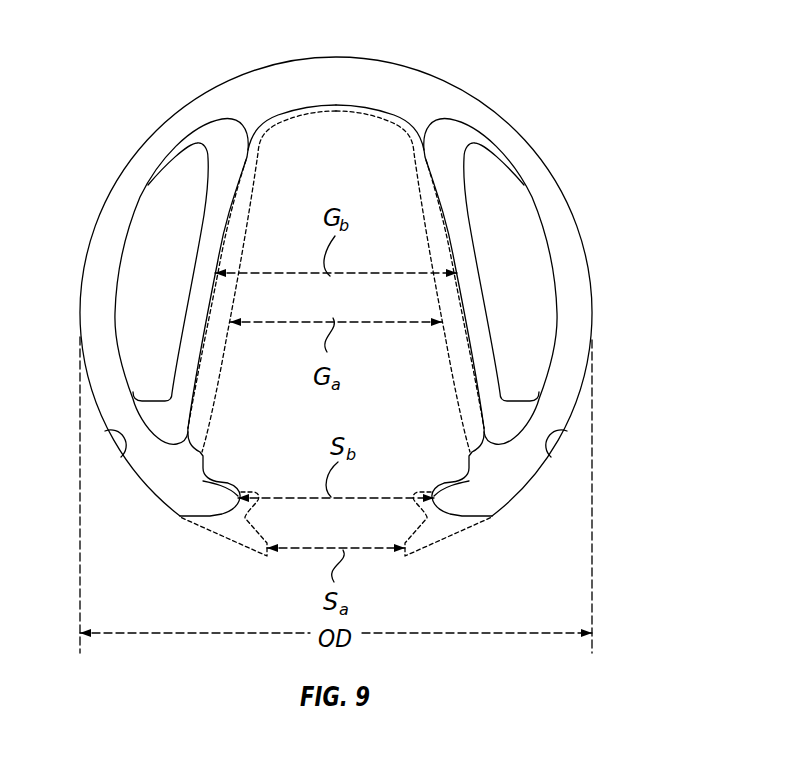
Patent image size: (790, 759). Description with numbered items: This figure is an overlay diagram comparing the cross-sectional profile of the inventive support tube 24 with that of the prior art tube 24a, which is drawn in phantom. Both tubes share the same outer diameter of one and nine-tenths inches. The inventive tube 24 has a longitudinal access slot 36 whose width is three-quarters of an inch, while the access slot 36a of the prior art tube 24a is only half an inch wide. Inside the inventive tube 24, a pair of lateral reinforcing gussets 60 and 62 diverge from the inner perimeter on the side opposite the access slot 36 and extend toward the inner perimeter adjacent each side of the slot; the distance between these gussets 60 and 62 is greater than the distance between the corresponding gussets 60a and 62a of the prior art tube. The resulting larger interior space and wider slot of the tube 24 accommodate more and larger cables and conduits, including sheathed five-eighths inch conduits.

The support tube 24 is at (477, 500).
The prior art tube 24a is at (227, 530).
The access slot 36 is at (242, 492).
The access slot of the prior art tube 36a is at (405, 553).
The lateral reinforcing gusset 60 is at (482, 347).
The gusset of the prior art tube 60a is at (463, 383).
The lateral reinforcing gusset 62 is at (213, 202).
The gusset of the prior art tube 62a is at (237, 239).